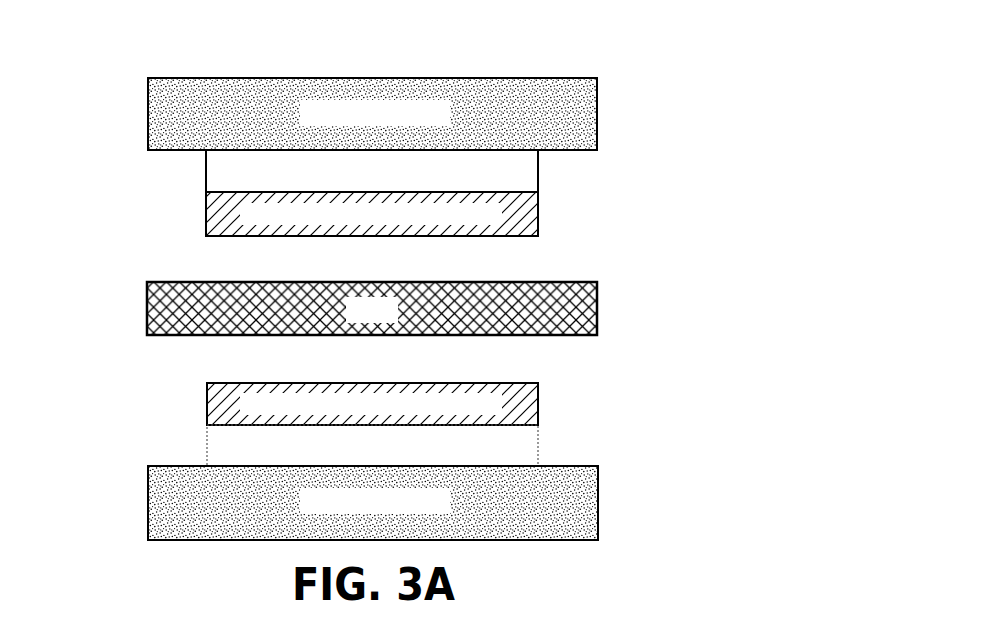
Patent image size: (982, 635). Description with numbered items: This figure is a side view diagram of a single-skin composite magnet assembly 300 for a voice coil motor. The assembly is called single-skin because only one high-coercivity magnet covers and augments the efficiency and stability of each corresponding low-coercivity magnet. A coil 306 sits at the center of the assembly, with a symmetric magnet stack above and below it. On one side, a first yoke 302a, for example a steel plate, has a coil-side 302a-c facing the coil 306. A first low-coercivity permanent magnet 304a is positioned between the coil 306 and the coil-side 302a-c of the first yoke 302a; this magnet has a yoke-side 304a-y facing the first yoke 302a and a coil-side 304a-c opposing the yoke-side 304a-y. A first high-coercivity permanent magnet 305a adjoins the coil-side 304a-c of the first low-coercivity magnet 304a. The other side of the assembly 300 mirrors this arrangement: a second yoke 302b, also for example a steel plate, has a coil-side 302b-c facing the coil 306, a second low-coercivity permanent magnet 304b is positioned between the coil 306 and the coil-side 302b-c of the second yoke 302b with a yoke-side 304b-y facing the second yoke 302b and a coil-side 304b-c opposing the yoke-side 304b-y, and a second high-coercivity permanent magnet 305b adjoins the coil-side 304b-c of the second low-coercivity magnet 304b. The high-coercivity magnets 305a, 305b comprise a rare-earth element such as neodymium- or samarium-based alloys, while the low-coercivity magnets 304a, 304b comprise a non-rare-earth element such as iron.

The single-skin composite magnet assembly 300 is at (134, 39).
The first yoke 302a is at (580, 503).
The second yoke 302b is at (585, 115).
The coil-side of first yoke 302a-c is at (162, 453).
The coil-side of second yoke 302b-c is at (176, 163).
The first low-coercivity permanent magnet 304a is at (525, 447).
The second low-coercivity permanent magnet 304b is at (528, 172).
The coil-side of first low-coercivity magnet 304a-c is at (470, 438).
The coil-side of second low-coercivity magnet 304b-c is at (290, 178).
The yoke-side of first low-coercivity magnet 304a-y is at (520, 480).
The yoke-side of second low-coercivity magnet 304b-y is at (463, 136).
The first high-coercivity permanent magnet 305a is at (523, 402).
The second high-coercivity permanent magnet 305b is at (532, 215).
The coil 306 is at (590, 305).